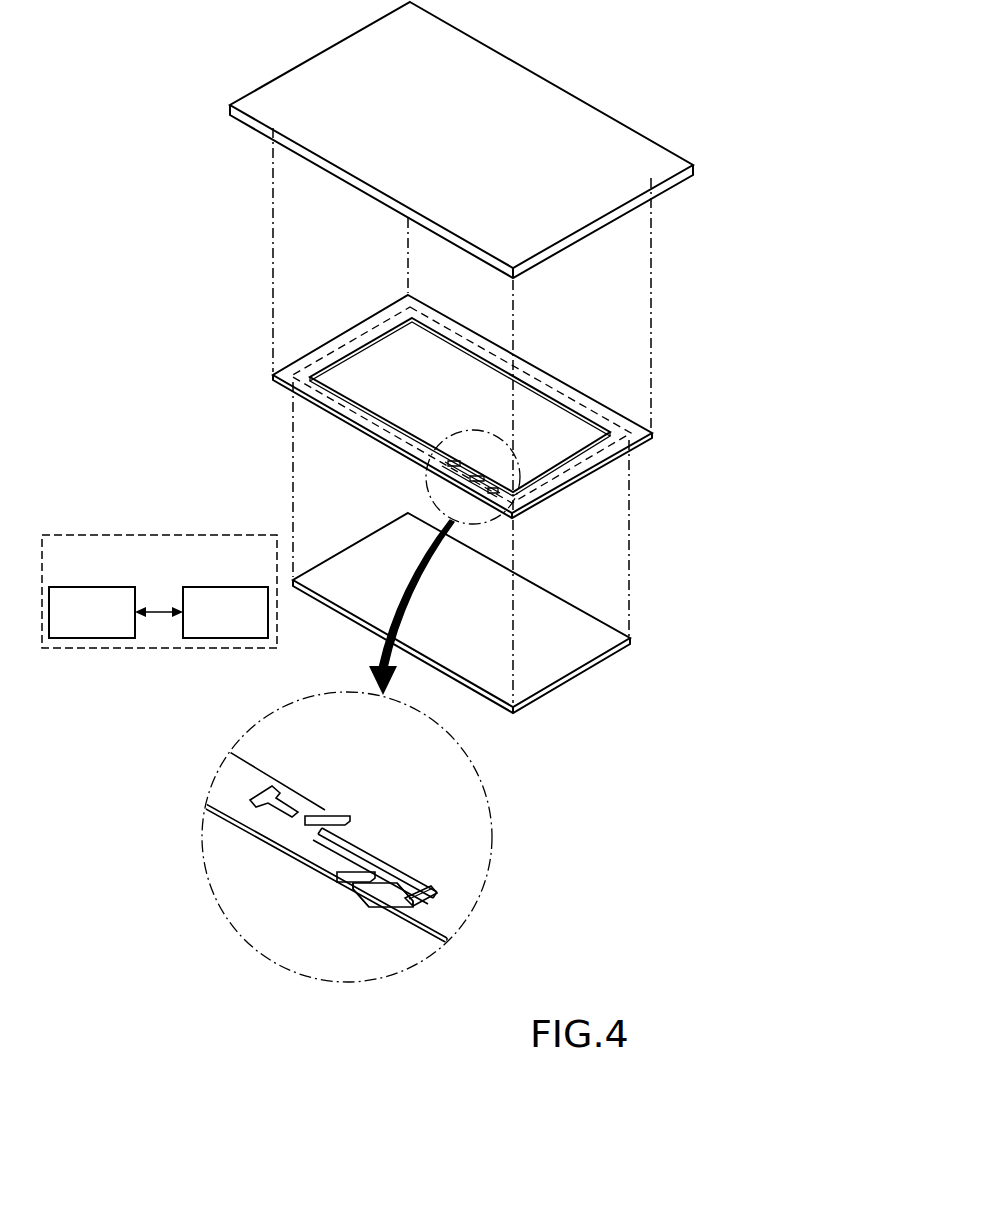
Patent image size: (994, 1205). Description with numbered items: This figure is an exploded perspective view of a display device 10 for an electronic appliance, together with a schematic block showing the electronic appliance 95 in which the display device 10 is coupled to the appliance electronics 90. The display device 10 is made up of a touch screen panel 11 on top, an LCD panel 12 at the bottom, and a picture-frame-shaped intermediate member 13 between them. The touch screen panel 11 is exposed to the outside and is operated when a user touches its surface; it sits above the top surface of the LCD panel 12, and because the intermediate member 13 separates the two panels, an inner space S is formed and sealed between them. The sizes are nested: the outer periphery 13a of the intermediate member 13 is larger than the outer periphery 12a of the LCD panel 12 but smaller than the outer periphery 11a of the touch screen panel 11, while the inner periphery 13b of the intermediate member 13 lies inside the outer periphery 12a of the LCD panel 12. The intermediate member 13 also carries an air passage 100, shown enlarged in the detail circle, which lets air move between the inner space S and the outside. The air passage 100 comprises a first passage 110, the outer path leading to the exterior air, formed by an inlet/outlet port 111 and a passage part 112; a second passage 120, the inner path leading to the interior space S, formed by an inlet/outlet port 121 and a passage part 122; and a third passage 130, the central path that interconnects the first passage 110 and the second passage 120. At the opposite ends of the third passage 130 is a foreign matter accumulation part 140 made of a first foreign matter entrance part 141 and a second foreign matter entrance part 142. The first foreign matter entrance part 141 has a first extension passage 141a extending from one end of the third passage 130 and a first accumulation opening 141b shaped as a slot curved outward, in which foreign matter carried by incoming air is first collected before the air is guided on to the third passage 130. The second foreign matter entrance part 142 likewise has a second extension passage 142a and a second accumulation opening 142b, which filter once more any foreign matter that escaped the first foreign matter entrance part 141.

The display device 10 is at (277, 33).
The touch screen panel 11 is at (612, 126).
The outer periphery of the touch screen panel 11a is at (667, 188).
The LCD panel 12 is at (585, 652).
The outer periphery of the LCD panel 12a is at (578, 675).
The intermediate member 13 is at (550, 383).
The outer periphery of the intermediate member 13a is at (573, 483).
The inner periphery of the intermediate member 13b is at (543, 468).
The inner space S is at (562, 428).
The air passage 100 is at (424, 481).
The electronic appliance 95 is at (158, 534).
The appliance electronics 90 is at (95, 588).
The first passage 110 is at (362, 972).
The inlet/outlet port 111 is at (350, 882).
The passage part 112 is at (383, 880).
The second passage 120 is at (266, 878).
The inlet/outlet port 121 is at (340, 855).
The passage part 122 is at (332, 858).
The third passage 130 is at (335, 862).
The foreign matter accumulation part 140 is at (462, 831).
The first foreign matter entrance part 141 is at (489, 865).
The first extension passage 141a is at (398, 892).
The first accumulation opening 141b is at (428, 895).
The second foreign matter entrance part 142 is at (437, 790).
The second extension passage 142a is at (335, 815).
The second accumulation opening 142b is at (282, 796).